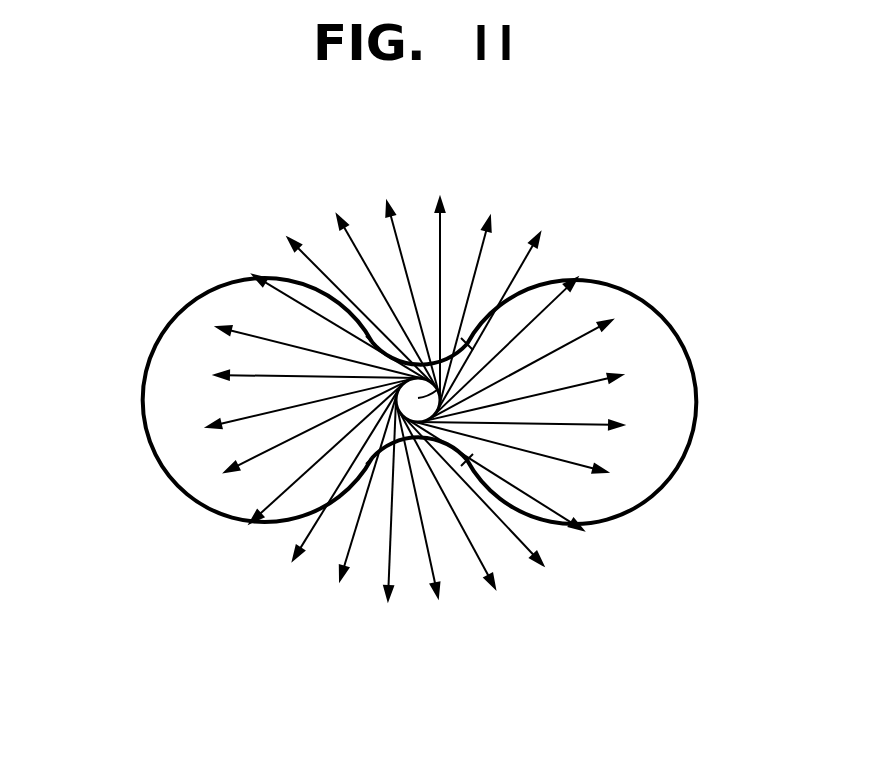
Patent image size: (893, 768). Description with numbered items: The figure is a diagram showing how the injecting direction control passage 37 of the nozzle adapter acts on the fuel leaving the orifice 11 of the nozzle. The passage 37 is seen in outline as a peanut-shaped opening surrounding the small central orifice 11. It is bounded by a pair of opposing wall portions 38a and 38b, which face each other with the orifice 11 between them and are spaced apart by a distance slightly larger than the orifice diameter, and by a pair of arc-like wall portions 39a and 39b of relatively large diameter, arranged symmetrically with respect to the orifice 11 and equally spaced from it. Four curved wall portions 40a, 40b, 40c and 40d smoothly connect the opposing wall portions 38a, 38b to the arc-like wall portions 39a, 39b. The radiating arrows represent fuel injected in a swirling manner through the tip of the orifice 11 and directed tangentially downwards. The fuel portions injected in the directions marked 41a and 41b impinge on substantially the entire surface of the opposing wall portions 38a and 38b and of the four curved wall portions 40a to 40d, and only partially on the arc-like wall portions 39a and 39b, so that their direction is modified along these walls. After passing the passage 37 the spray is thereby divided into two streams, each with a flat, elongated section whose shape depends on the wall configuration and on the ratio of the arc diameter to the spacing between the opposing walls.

The orifice 11 is at (562, 340).
The injecting direction control passage 37 is at (662, 387).
The opposing wall portion 38a is at (430, 352).
The opposing wall portion 38b is at (422, 442).
The arc-like wall portion 39a is at (142, 422).
The arc-like wall portion 39b is at (690, 465).
The curved wall portion 40a is at (372, 357).
The curved wall portion 40b is at (470, 352).
The curved wall portion 40c is at (377, 447).
The curved wall portion 40d is at (465, 457).
The fuel injecting direction 41a is at (497, 205).
The fuel injecting direction 41b is at (592, 538).